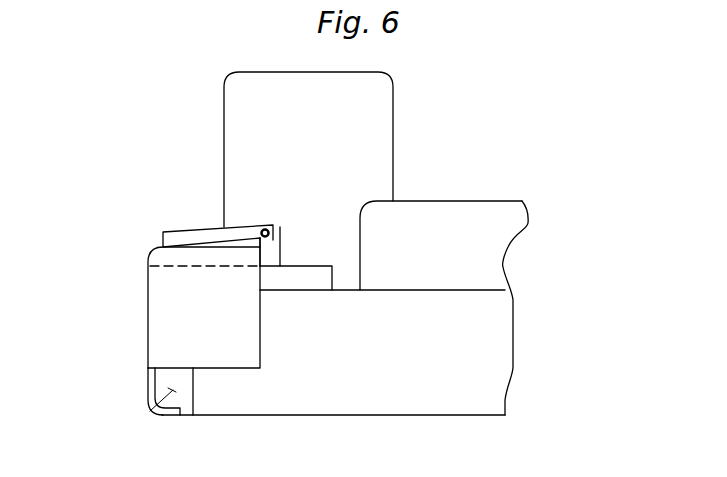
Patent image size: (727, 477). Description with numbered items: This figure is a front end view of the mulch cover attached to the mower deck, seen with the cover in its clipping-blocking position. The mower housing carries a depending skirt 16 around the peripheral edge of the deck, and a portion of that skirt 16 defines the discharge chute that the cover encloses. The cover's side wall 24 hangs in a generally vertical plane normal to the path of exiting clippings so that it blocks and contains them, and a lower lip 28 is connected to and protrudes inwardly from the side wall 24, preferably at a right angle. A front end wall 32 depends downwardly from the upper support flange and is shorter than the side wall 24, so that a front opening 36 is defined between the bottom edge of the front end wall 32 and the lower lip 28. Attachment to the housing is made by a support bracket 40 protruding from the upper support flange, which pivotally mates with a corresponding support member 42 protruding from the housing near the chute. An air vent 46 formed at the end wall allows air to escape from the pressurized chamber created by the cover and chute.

The skirt 16 is at (458, 358).
The side wall 24 is at (148, 287).
The lower lip 28 is at (172, 415).
The front end wall 32 is at (182, 291).
The front opening 36 is at (148, 413).
The support bracket 40 is at (175, 239).
The support member 42 is at (281, 224).
The air vent 46 is at (279, 248).